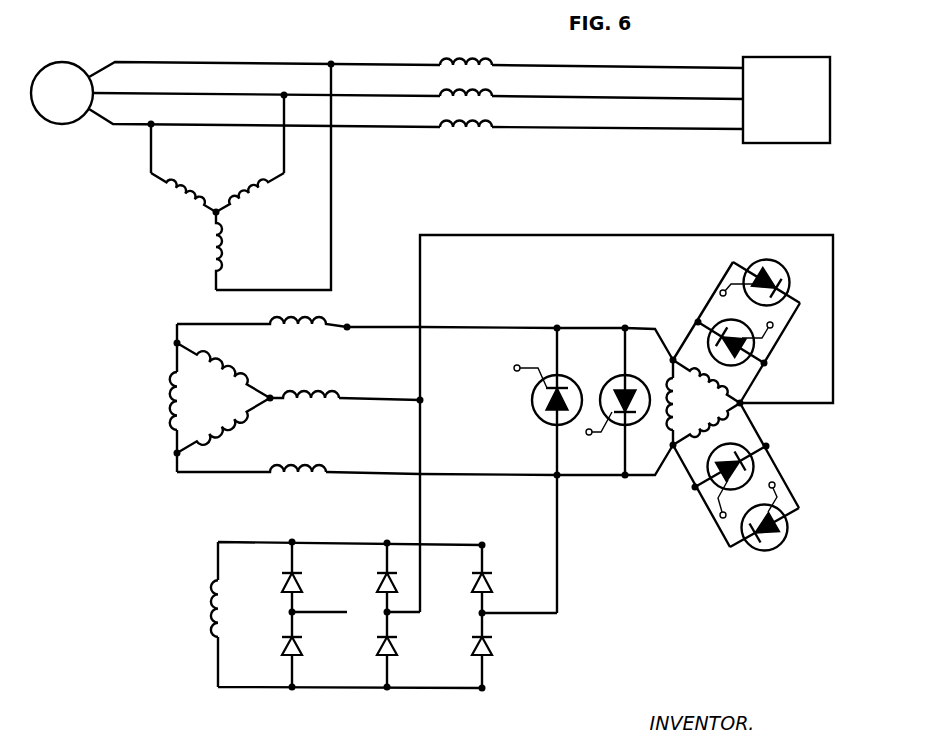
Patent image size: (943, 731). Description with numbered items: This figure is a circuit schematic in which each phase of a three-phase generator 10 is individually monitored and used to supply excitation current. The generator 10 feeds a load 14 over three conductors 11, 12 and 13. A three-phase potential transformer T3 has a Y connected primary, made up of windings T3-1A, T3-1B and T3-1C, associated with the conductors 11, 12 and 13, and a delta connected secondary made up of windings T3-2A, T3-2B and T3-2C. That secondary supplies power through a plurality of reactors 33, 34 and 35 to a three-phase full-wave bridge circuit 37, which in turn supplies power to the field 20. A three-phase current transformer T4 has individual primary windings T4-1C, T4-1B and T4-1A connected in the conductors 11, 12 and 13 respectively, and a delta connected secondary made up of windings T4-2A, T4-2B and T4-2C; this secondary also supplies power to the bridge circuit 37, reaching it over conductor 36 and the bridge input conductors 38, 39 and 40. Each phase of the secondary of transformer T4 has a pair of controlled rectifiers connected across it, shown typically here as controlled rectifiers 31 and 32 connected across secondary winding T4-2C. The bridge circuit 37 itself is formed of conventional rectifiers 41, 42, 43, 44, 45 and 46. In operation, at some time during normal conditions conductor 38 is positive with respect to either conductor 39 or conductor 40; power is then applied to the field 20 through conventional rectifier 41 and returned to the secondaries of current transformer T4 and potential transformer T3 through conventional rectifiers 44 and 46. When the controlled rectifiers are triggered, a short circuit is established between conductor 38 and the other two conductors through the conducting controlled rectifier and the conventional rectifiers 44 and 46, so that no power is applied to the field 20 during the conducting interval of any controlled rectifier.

The generator 10 is at (61, 62).
The conductor 11 is at (161, 63).
The conductor 12 is at (162, 93).
The conductor 13 is at (134, 124).
The load 14 is at (776, 57).
The field 20 is at (184, 628).
The controlled rectifier 31 is at (536, 416).
The controlled rectifier 32 is at (607, 383).
The reactor 33 is at (324, 323).
The reactor 34 is at (305, 396).
The reactor 35 is at (292, 474).
The conductor 36 is at (420, 283).
The three-phase full-wave bridge circuit 37 is at (381, 718).
The conductor 38 is at (372, 327).
The conductor 39 is at (373, 400).
The conductor 40 is at (373, 474).
The conventional rectifier 41 is at (280, 585).
The diode 42 is at (280, 649).
The diode 43 is at (377, 584).
The conventional rectifier 44 is at (376, 649).
The diode 45 is at (472, 586).
The conventional rectifier 46 is at (472, 651).
The three-phase potential transformer T3 is at (215, 177).
The three-phase current transformer T4 is at (721, 405).
The T3 primary winding A T3-1A is at (183, 192).
The T3 primary winding B T3-1B is at (264, 196).
The T3 primary winding C T3-1C is at (226, 252).
The T3 secondary winding A T3-2A is at (231, 364).
The T3 secondary winding B T3-2B is at (234, 437).
The T3 secondary winding C T3-2C is at (170, 400).
The primary winding T4-1A is at (492, 127).
The primary winding T4-1B is at (492, 96).
The primary winding T4-1C is at (492, 65).
The T4 secondary winding A T4-2A is at (740, 385).
The T4 secondary winding B T4-2B is at (735, 420).
The secondary winding T4-2C is at (672, 432).